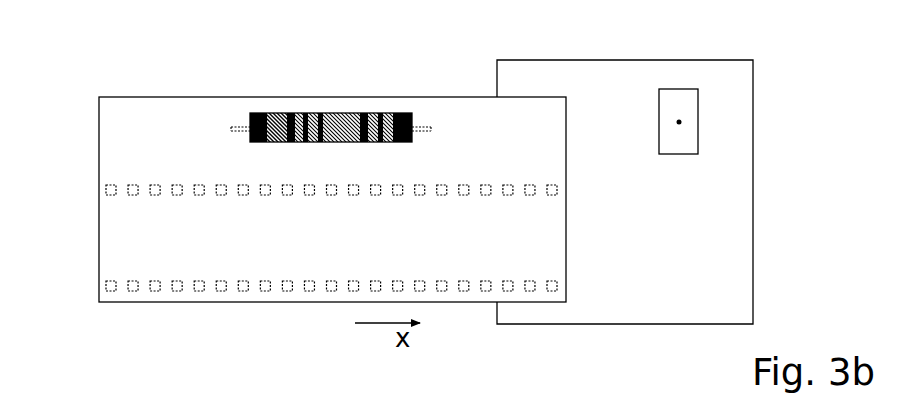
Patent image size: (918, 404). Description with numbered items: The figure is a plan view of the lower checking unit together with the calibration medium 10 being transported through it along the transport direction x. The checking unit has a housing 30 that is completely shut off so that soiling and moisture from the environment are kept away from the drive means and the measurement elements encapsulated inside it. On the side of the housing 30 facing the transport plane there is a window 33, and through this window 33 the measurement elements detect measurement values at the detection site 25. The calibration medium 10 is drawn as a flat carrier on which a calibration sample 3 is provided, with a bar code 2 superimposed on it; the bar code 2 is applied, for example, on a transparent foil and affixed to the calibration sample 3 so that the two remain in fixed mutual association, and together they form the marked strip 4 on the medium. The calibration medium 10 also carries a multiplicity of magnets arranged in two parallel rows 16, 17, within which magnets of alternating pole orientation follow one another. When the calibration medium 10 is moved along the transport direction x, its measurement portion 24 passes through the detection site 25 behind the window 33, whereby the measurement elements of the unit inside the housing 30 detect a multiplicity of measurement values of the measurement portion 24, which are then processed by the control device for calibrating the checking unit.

The bar code 2 is at (290, 142).
The calibration sample 3 is at (273, 142).
The marking / bar code pattern 4 is at (413, 110).
The calibration medium 10 is at (332, 199).
The first row of magnets 16 is at (90, 189).
The second row of magnets 17 is at (90, 288).
The measurement portion 24 is at (431, 129).
The detection site 25 is at (679, 122).
The housing 30 is at (753, 306).
The window 33 is at (697, 104).